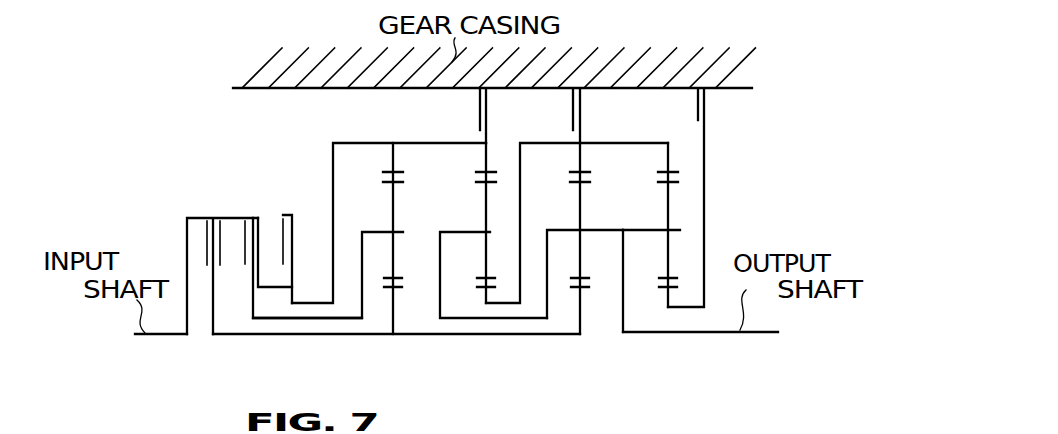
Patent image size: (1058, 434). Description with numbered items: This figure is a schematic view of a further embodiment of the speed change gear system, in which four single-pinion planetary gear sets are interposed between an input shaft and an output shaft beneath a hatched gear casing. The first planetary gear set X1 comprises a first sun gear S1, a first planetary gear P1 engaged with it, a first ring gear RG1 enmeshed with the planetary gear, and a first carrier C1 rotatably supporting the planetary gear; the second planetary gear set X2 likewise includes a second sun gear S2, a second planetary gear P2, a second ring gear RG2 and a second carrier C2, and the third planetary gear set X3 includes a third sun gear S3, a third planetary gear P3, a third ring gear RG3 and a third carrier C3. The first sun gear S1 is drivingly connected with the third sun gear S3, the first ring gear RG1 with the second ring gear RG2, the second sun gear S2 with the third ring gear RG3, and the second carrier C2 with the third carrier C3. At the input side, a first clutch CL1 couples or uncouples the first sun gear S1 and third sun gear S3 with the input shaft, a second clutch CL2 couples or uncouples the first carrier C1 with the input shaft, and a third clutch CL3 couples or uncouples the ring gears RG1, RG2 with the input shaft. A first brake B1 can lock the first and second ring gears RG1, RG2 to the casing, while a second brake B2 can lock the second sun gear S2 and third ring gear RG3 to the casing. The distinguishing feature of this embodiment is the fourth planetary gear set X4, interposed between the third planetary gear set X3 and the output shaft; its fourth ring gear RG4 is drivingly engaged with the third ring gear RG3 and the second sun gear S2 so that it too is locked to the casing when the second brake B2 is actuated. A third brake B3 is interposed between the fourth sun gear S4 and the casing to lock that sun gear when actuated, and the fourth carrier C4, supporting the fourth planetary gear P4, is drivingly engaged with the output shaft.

The first clutch CL1 is at (218, 228).
The second clutch CL2 is at (258, 222).
The third clutch CL3 is at (300, 228).
The first brake B1 is at (490, 105).
The second brake B2 is at (584, 105).
The third brake B3 is at (708, 105).
The first ring gear RG1 is at (404, 156).
The second ring gear RG2 is at (484, 158).
The third ring gear RG3 is at (582, 160).
The fourth ring gear RG4 is at (670, 160).
The first carrier C1 is at (397, 234).
The second carrier C2 is at (488, 234).
The third carrier C3 is at (584, 232).
The fourth carrier C4 is at (670, 232).
The first planetary gear P1 is at (395, 258).
The second planetary gear P2 is at (486, 254).
The third planetary gear P3 is at (582, 258).
The fourth planetary gear P4 is at (668, 254).
The first sun gear S1 is at (398, 312).
The second sun gear S2 is at (486, 306).
The third sun gear S3 is at (591, 312).
The fourth sun gear S4 is at (668, 306).
The first planetary gear set X1 is at (385, 313).
The second planetary gear set X2 is at (493, 298).
The third planetary gear set X3 is at (570, 307).
The fourth planetary gear set X4 is at (678, 297).